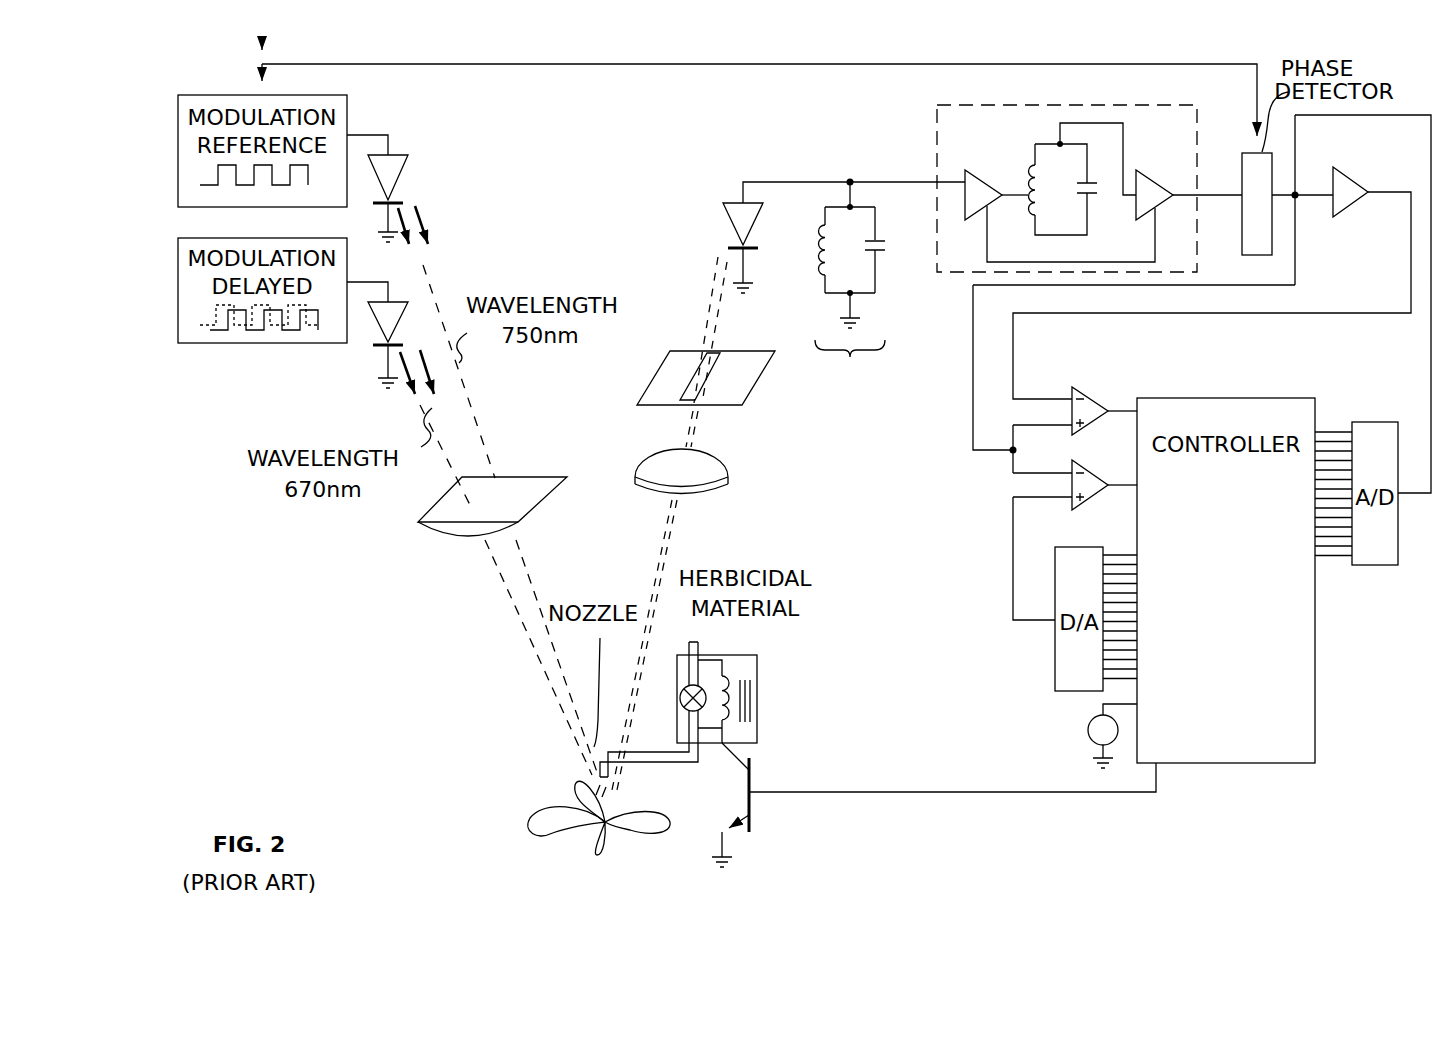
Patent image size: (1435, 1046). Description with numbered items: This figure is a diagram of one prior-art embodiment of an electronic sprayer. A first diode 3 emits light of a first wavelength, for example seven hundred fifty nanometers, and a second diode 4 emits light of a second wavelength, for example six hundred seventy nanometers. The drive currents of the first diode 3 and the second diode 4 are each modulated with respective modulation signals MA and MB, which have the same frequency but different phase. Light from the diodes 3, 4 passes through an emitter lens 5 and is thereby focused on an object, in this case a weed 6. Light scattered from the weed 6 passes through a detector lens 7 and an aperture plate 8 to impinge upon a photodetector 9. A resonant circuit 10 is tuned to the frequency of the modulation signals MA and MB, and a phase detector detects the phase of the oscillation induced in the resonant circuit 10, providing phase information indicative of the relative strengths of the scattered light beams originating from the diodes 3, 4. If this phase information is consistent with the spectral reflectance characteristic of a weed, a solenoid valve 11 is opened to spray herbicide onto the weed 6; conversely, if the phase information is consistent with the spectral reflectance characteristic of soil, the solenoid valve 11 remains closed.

The first diode 3 is at (408, 164).
The second diode 4 is at (378, 328).
The emitter lens 5 is at (418, 524).
The weed 6 is at (560, 812).
The detector lens 7 is at (638, 468).
The aperture plate 8 is at (742, 402).
The photodetector 9 is at (725, 212).
The resonant circuit 10 is at (850, 283).
The solenoid valve 11 is at (757, 678).